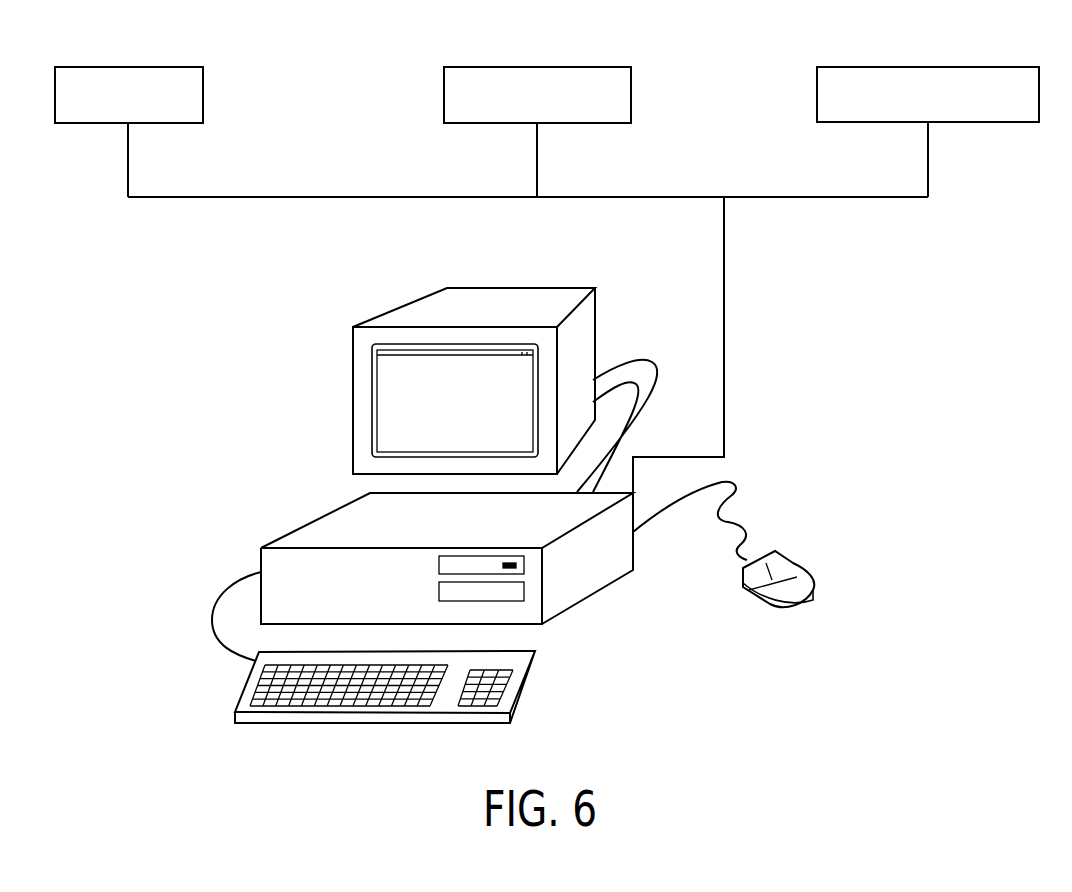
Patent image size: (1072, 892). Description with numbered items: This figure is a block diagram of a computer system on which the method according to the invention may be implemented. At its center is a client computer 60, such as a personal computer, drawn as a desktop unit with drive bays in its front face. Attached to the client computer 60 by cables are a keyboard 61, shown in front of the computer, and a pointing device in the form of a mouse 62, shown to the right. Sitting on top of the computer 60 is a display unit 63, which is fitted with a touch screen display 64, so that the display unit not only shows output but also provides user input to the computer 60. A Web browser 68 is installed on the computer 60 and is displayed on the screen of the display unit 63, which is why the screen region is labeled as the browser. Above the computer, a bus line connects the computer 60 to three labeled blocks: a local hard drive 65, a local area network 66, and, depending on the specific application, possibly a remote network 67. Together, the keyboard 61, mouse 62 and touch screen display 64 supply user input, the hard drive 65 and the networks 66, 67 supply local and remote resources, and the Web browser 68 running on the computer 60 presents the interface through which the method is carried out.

The client computer 60 is at (302, 527).
The keyboard 61 is at (523, 686).
The mouse 62 is at (783, 558).
The display unit 63 is at (532, 288).
The touch screen display 64 is at (356, 354).
The local hard drive 65 is at (125, 67).
The local area network 66 is at (567, 67).
The remote network 67 is at (972, 67).
The Web browser 68 is at (393, 417).